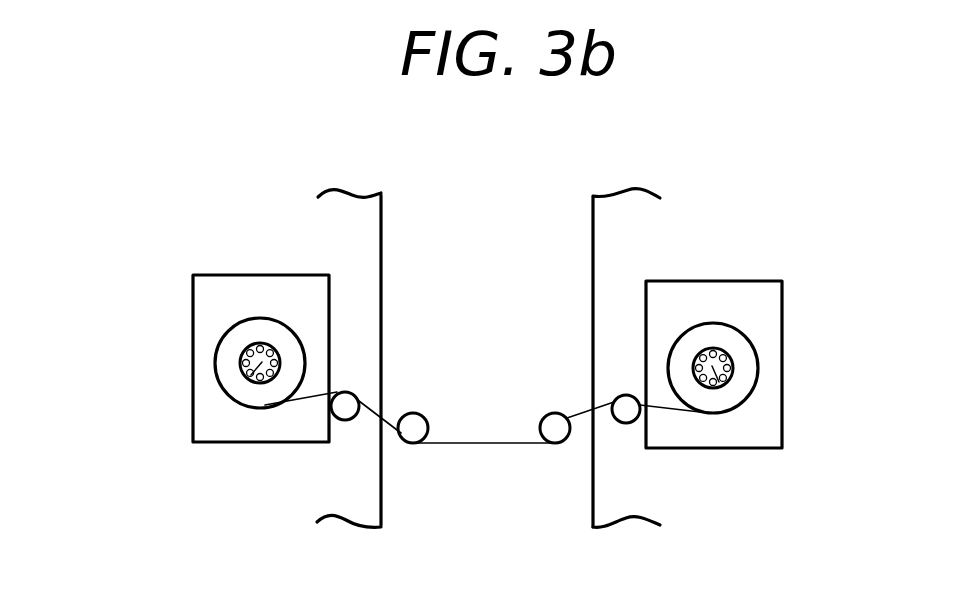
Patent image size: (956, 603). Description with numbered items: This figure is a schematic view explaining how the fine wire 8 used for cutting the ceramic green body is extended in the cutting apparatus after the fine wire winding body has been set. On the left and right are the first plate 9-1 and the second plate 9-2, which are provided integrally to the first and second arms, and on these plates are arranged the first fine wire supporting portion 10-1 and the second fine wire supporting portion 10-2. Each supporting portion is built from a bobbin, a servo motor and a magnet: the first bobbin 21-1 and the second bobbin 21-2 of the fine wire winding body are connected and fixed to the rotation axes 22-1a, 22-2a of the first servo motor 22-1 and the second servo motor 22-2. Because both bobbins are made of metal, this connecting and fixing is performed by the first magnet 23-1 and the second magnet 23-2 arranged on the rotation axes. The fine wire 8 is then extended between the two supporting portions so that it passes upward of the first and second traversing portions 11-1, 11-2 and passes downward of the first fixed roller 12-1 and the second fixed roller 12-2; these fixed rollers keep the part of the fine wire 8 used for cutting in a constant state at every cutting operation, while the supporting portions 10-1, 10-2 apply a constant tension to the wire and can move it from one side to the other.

The fine wire 8 is at (487, 443).
The first plate 9-1 is at (350, 214).
The second plate 9-2 is at (628, 220).
The first fine wire supporting portion 10-1 is at (189, 341).
The second fine wire supporting portion 10-2 is at (774, 333).
The first traversing portion 11-1 is at (345, 418).
The second traversing portion 11-2 is at (621, 418).
The first fixed roller 12-1 is at (413, 433).
The second fixed roller 12-2 is at (555, 433).
The first bobbin 21-1 is at (265, 330).
The second bobbin 21-2 is at (736, 344).
The first servo motor 22-1 is at (230, 423).
The second servo motor 22-2 is at (762, 412).
The rotation axis 22-1a is at (248, 374).
The rotation axis 22-2a is at (716, 385).
The first magnet 23-1 is at (245, 352).
The second magnet 23-2 is at (733, 366).